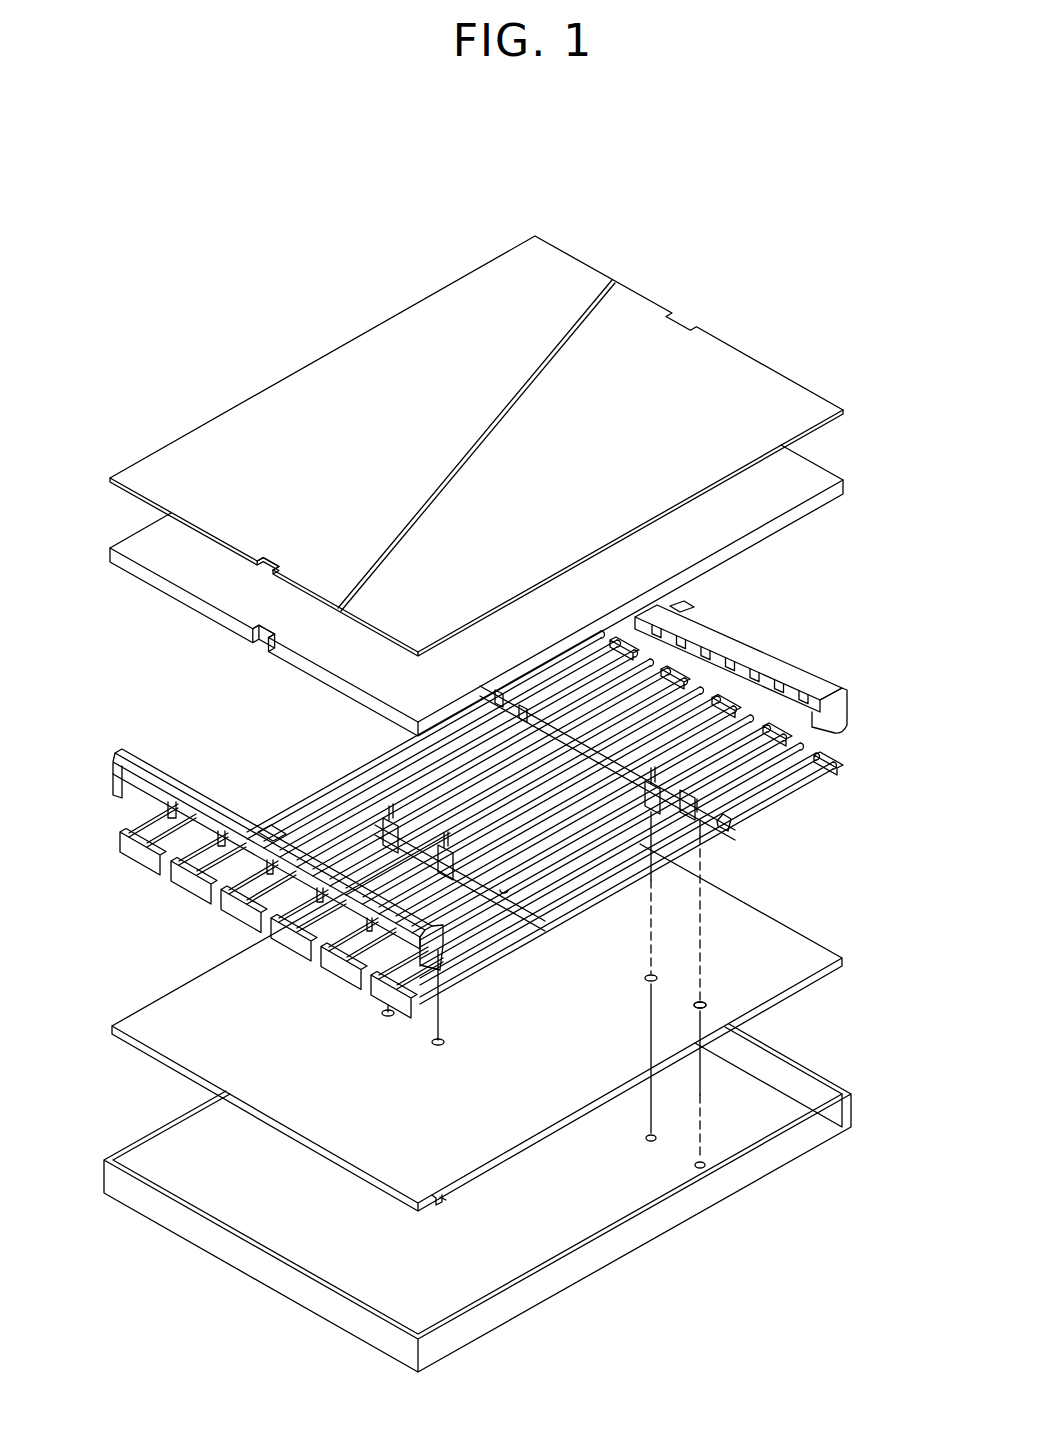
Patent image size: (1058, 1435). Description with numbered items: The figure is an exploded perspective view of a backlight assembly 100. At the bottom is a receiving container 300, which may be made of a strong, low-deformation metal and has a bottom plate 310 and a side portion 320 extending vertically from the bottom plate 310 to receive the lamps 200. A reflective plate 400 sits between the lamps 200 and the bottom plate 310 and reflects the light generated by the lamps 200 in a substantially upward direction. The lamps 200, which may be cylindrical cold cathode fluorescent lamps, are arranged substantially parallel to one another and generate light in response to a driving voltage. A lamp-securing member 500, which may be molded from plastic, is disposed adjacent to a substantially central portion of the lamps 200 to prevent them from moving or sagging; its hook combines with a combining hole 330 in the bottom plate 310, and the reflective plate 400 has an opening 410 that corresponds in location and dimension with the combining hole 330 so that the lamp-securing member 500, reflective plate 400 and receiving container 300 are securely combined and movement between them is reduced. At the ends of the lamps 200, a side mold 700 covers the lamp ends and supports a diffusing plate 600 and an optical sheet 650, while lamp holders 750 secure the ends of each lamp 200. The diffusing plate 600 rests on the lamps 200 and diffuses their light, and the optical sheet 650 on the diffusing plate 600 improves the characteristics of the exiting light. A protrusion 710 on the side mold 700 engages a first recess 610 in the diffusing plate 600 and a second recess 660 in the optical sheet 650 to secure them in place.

The backlight assembly 100 is at (590, 203).
The optical sheet 650 is at (793, 400).
The second recess 660 is at (273, 563).
The diffusing plate 600 is at (818, 478).
The first recess 610 is at (264, 641).
The side mold 700 is at (790, 642).
The protrusion 710 is at (273, 832).
The lamp holders 750 is at (190, 883).
The lamps 200 is at (773, 790).
The lamp-securing member 500 is at (737, 849).
The reflective plate 400 is at (822, 912).
The opening 410 is at (710, 1006).
The receiving container 300 is at (847, 1046).
The bottom plate 310 is at (651, 1191).
The side portion 320 is at (607, 1244).
The combining hole 330 is at (725, 1152).